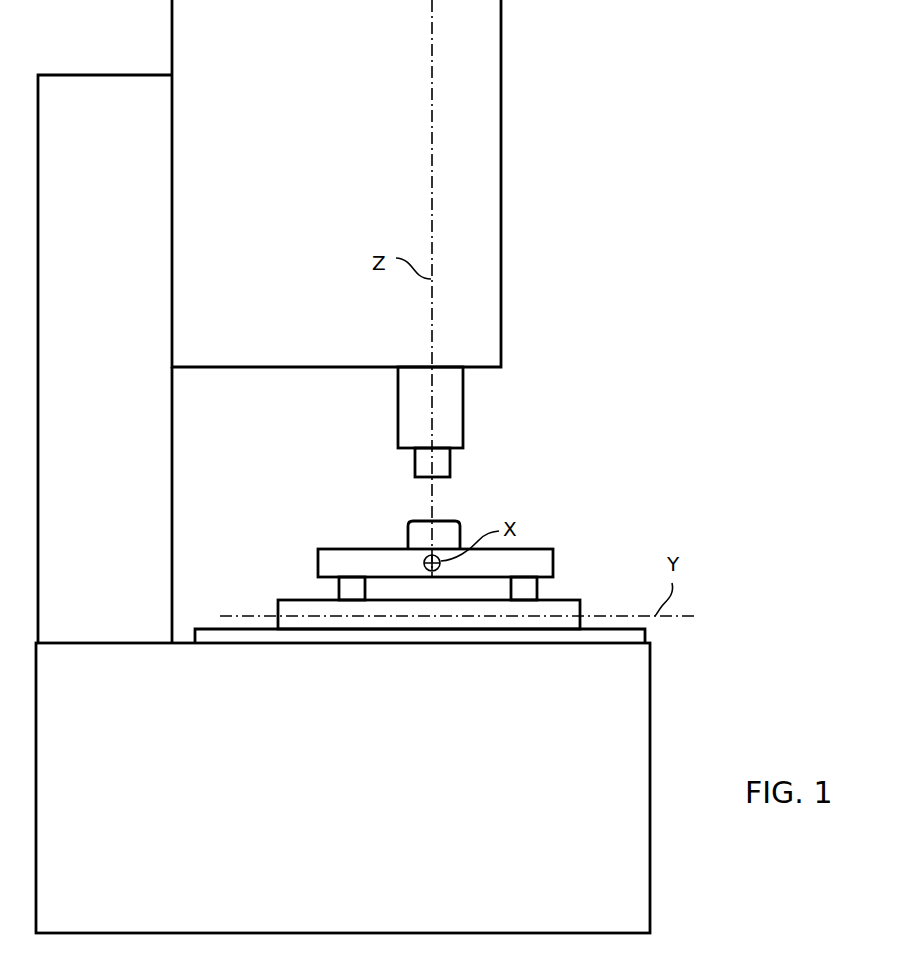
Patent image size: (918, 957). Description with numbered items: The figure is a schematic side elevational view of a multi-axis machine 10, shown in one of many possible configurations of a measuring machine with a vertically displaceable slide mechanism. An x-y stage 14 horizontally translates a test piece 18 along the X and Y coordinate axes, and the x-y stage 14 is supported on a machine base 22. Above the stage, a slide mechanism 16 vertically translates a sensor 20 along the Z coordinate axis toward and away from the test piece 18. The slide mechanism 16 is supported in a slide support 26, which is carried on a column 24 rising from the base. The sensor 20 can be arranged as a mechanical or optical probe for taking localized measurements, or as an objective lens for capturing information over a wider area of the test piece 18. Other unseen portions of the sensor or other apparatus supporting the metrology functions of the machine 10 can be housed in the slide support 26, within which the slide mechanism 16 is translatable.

The multi-axis machine 10 is at (502, 150).
The x-y stage 14 is at (331, 551).
The slide mechanism 16 is at (398, 398).
The test piece 18 is at (409, 528).
The sensor 20 is at (451, 465).
The machine base 22 is at (338, 767).
The column 24 is at (112, 273).
The slide support 26 is at (303, 181).